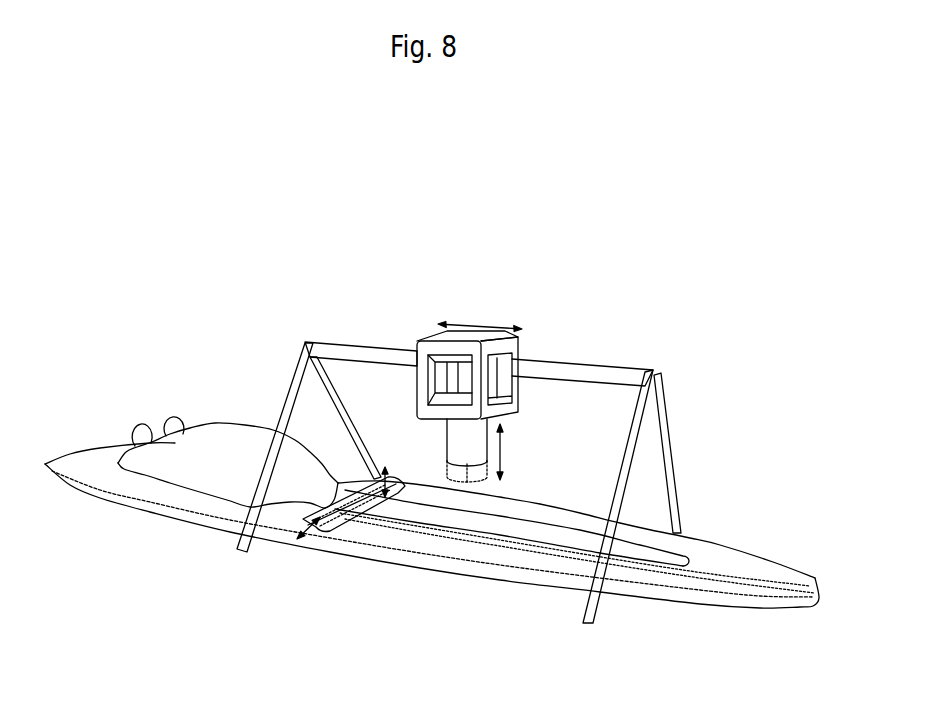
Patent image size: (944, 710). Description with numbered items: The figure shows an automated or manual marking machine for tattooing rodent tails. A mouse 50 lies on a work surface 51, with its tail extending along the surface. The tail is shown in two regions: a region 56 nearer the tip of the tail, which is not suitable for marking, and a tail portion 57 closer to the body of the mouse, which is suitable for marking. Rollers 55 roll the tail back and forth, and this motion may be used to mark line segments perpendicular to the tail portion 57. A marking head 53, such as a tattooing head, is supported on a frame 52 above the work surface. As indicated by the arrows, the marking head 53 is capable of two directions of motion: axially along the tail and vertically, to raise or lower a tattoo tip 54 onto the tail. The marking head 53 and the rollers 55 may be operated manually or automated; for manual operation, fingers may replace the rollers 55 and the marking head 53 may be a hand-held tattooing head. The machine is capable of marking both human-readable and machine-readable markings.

The mouse 50 is at (230, 437).
The work surface 51 is at (112, 482).
The frame 52 is at (611, 372).
The marking head 53 is at (427, 343).
The tattoo tip 54 is at (467, 465).
The rollers 55 is at (340, 520).
The tail tip region 56 is at (572, 540).
The tail marking portion 57 is at (420, 512).